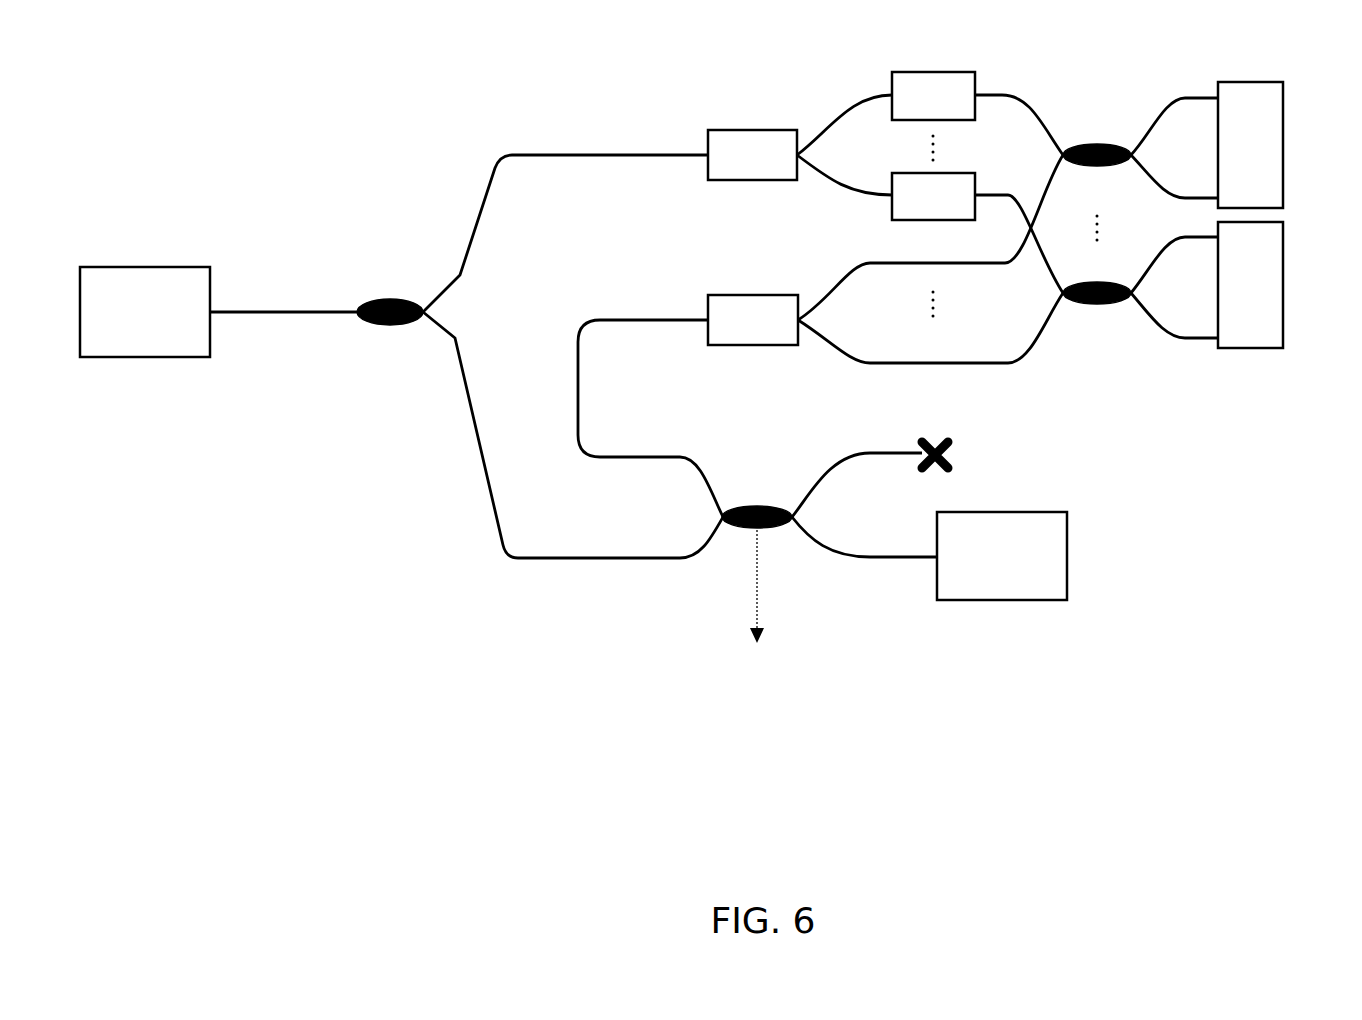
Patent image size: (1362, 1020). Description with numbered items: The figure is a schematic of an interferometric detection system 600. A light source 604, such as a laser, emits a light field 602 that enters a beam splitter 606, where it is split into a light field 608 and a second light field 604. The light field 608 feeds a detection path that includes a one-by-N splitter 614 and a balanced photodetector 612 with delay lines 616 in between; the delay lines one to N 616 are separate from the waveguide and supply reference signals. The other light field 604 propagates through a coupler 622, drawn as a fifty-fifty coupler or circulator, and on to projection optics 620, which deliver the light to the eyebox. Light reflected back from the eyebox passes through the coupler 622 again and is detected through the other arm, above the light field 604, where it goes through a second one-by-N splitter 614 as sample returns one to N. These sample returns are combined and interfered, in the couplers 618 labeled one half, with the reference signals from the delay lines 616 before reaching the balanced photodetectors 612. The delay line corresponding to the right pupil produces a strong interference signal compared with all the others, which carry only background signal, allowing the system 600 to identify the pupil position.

The interferometric detection system 600 is at (580, 89).
The light field 602 is at (272, 303).
The light source 604 is at (182, 278).
The beam splitter 606 is at (388, 298).
The light field 608 is at (582, 157).
The balanced photodetector 612 is at (1250, 73).
The 1×N splitter 614 is at (733, 122).
The delay lines 616 is at (935, 65).
The 50/50 couplers 618 is at (1095, 145).
The projection optics 620 is at (993, 508).
The coupler 622 is at (747, 747).